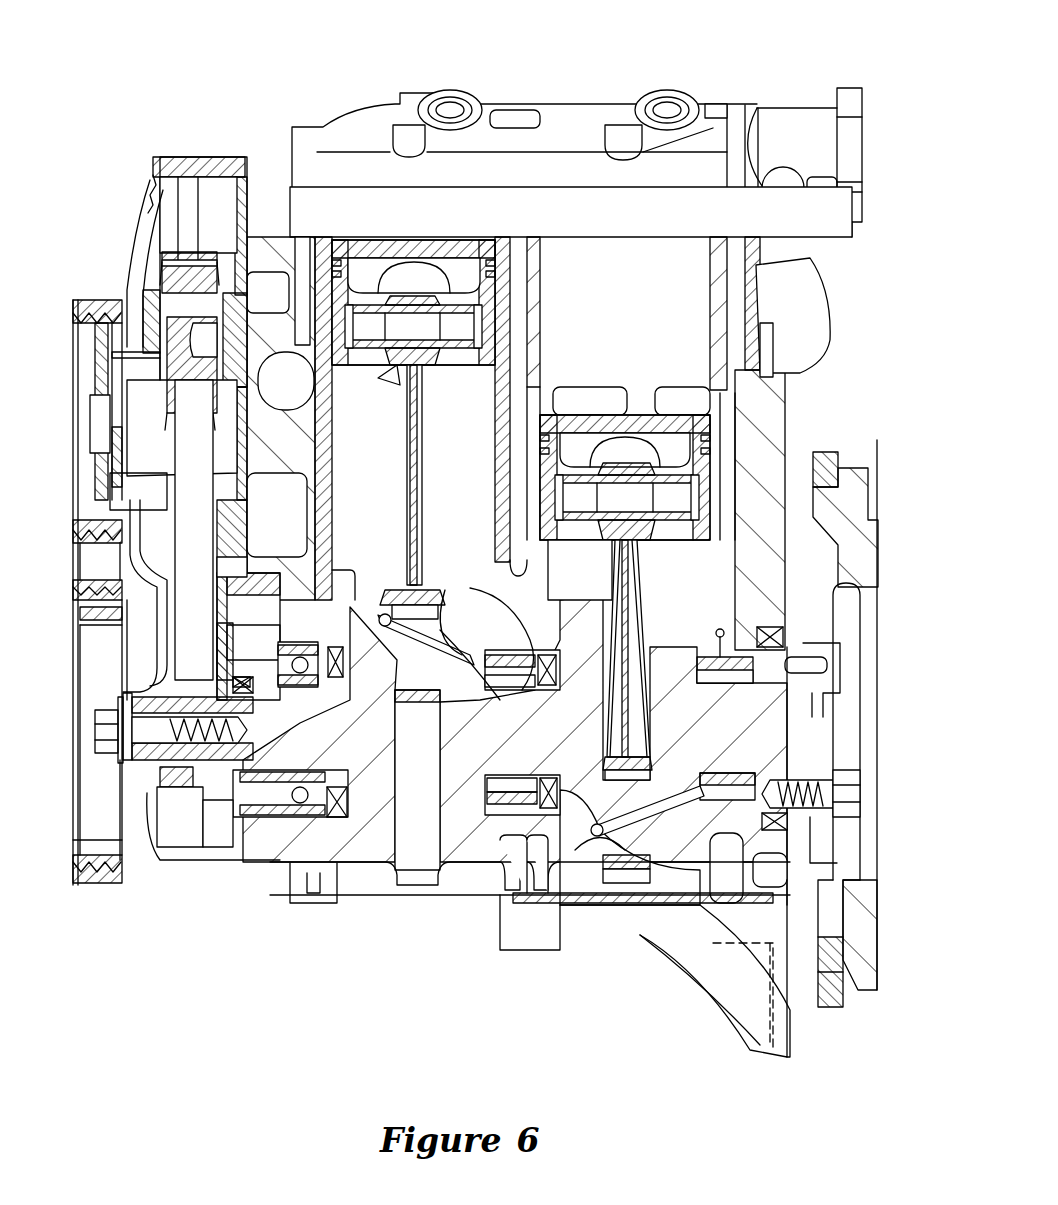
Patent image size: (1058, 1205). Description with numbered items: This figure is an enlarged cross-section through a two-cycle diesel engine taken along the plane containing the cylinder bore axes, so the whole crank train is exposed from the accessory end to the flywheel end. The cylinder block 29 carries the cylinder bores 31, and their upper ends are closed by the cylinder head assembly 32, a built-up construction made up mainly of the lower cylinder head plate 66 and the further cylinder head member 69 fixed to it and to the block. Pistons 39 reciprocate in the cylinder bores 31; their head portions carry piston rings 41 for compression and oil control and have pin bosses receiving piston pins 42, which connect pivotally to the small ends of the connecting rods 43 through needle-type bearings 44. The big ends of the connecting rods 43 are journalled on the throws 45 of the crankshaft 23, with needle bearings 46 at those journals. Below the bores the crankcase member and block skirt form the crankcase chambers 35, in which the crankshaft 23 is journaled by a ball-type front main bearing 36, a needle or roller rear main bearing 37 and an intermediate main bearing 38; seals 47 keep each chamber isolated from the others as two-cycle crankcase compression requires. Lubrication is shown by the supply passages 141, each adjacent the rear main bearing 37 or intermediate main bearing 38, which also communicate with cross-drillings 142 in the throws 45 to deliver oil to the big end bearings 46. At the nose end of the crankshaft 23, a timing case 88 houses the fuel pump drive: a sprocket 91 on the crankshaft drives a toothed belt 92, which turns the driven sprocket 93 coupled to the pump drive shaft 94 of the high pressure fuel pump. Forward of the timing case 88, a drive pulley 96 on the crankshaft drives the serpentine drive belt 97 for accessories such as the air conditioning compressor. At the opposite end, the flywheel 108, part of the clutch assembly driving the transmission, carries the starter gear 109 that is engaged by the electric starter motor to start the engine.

The crankshaft 23 is at (373, 770).
The cylinder block 29 is at (265, 258).
The cylinder bores 31 is at (712, 305).
The cylinder head assembly 32 is at (576, 124).
The crankcase chambers 35 is at (508, 572).
The front main bearing 36 is at (278, 858).
The rear main bearing 37 is at (715, 945).
The intermediate main bearing 38 is at (422, 893).
The pistons 39 is at (355, 255).
The piston rings 41 is at (500, 262).
The piston pins 42 is at (468, 300).
The connecting rods 43 is at (420, 522).
The needle-type bearings 44 is at (398, 366).
The throws 45 is at (442, 632).
The needle bearings 46 is at (446, 590).
The seals 47 is at (340, 790).
The lower cylinder head plate 66 is at (521, 212).
The cylinder head member 69 is at (622, 88).
The timing case 88 is at (208, 152).
The sprocket 91 is at (196, 795).
The toothed belt 92 is at (180, 255).
The driven sprocket 93 is at (160, 265).
The pump drive shaft 94 is at (187, 385).
The drive pulley 96 is at (128, 847).
The serpentine drive belt 97 is at (102, 885).
The flywheel 108 is at (852, 1000).
The starter gear 109 is at (830, 1010).
The supply passages 141 is at (548, 640).
The cross-drillings 142 is at (505, 632).